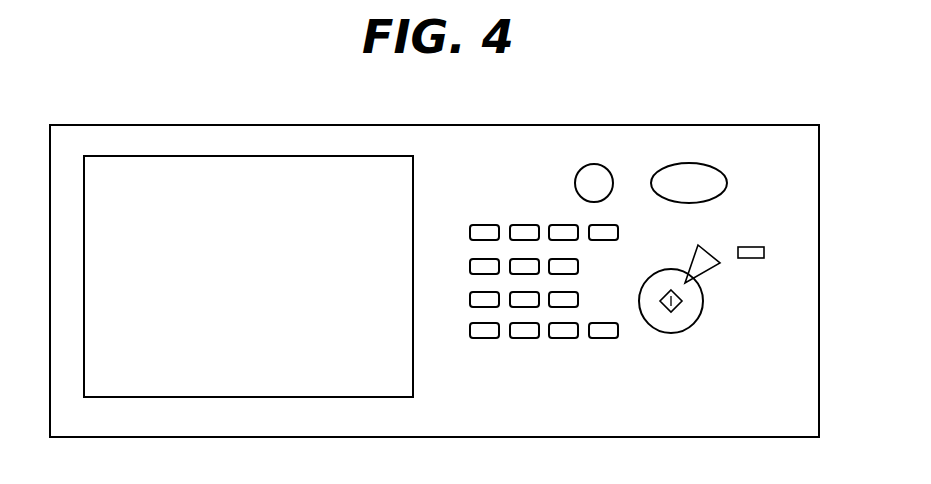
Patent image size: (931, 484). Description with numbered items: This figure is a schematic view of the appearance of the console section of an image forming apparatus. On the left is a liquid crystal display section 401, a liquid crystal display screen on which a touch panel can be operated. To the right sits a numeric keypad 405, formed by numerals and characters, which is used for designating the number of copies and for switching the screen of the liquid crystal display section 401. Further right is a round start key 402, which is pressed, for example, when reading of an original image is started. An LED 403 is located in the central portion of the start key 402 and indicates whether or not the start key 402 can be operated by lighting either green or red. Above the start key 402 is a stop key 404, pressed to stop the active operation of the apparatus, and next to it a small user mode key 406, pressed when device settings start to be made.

The liquid crystal display section 401 is at (226, 155).
The start key 402 is at (704, 303).
The LED 403 is at (675, 306).
The stop key 404 is at (712, 250).
The numeric keypad 405 is at (518, 225).
The user mode key 406 is at (755, 249).